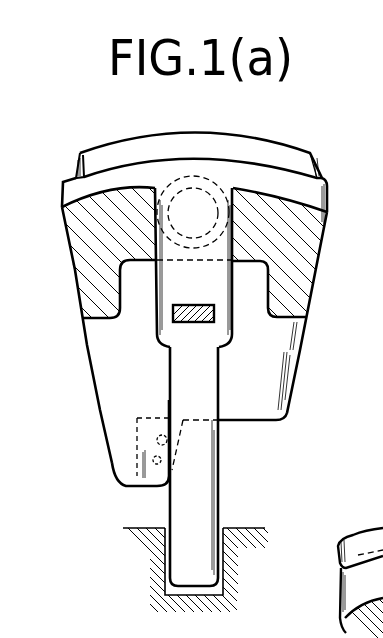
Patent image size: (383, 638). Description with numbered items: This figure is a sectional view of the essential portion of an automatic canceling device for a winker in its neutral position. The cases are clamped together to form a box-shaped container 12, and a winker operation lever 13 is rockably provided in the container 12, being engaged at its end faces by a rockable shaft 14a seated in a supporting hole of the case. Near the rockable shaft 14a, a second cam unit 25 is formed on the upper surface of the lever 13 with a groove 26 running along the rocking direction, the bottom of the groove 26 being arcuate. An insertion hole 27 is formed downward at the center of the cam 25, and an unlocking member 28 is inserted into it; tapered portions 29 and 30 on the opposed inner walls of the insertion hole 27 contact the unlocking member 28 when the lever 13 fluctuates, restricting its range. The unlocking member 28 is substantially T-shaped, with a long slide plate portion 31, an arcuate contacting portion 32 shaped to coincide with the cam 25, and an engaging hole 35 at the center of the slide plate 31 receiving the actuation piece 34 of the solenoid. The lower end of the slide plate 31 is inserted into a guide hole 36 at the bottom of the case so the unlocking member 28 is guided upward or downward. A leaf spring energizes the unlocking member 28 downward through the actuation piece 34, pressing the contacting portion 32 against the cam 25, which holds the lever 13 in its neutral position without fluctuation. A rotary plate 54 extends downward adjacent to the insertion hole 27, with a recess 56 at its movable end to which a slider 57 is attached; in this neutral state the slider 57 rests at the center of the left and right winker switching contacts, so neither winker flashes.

The container 12 is at (192, 551).
The winker operation lever 13 is at (191, 383).
The rockable shaft 14a is at (227, 288).
The second cam unit 25 is at (217, 163).
The groove 26 is at (136, 150).
The insertion hole 27 is at (152, 250).
The unlocking member 28 is at (222, 395).
The tapered portion 29 is at (220, 177).
The tapered portion 30 is at (257, 280).
The slide plate portion 31 is at (210, 473).
The contacting portion 32 is at (310, 187).
The actuation piece 34 is at (173, 312).
The engaging hole 35 is at (223, 343).
The guide hole 36 is at (212, 562).
The rotary plate 54 is at (97, 343).
The recess 56 is at (165, 478).
The slider 57 is at (153, 443).